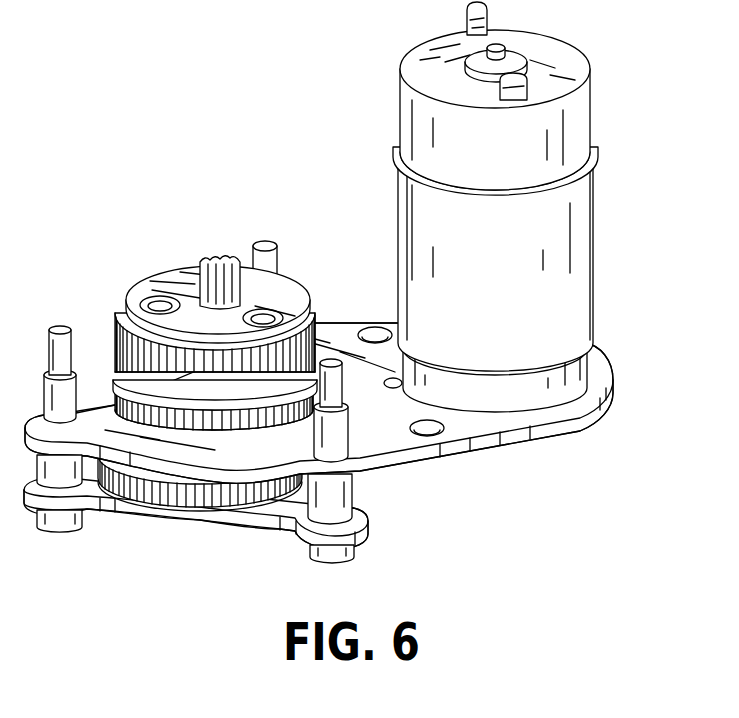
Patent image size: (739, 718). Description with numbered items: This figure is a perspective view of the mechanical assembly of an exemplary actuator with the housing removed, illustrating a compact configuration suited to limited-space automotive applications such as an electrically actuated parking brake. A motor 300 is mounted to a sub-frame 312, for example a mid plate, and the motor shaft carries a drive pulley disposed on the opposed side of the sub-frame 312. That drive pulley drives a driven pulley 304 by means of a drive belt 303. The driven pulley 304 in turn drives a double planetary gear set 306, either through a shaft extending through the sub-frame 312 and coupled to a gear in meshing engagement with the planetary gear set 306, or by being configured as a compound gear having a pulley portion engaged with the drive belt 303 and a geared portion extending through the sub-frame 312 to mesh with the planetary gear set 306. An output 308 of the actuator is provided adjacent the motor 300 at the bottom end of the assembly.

The motor 300 is at (598, 242).
The drive belt 303 is at (205, 500).
The driven pulley 304 is at (145, 508).
The double planetary gear set 306 is at (137, 287).
The output 308 is at (213, 253).
The sub-frame 312 is at (443, 458).